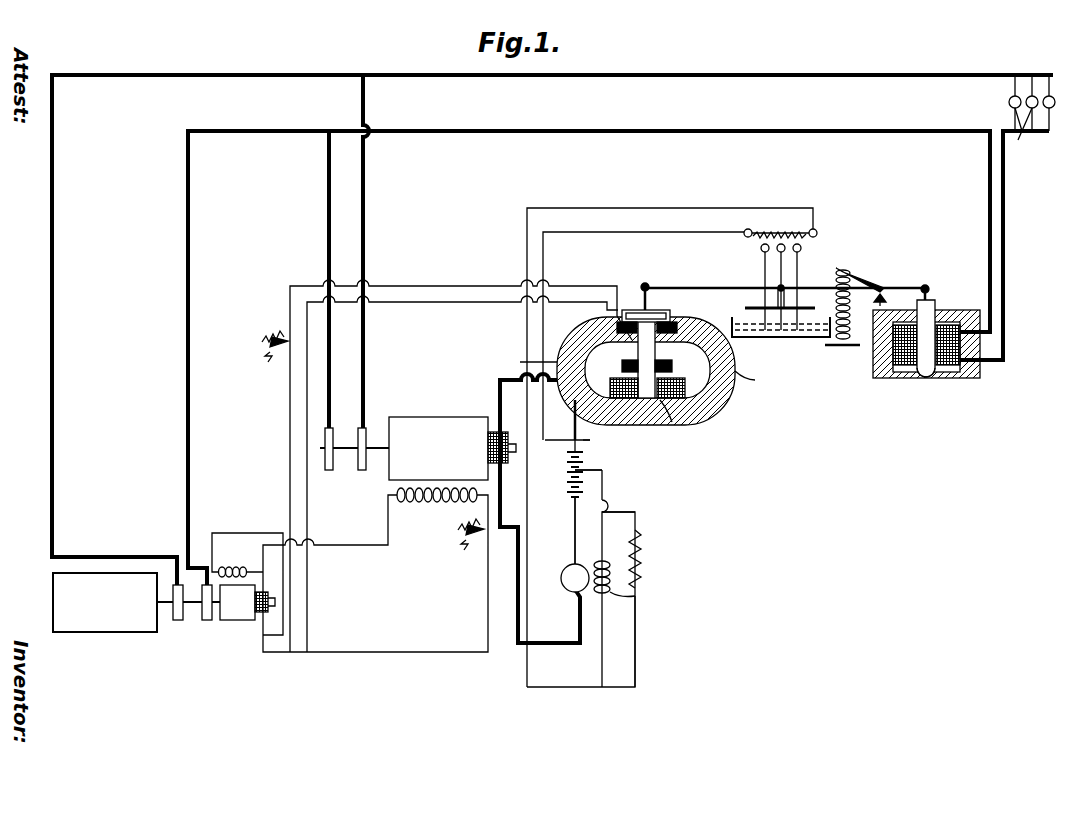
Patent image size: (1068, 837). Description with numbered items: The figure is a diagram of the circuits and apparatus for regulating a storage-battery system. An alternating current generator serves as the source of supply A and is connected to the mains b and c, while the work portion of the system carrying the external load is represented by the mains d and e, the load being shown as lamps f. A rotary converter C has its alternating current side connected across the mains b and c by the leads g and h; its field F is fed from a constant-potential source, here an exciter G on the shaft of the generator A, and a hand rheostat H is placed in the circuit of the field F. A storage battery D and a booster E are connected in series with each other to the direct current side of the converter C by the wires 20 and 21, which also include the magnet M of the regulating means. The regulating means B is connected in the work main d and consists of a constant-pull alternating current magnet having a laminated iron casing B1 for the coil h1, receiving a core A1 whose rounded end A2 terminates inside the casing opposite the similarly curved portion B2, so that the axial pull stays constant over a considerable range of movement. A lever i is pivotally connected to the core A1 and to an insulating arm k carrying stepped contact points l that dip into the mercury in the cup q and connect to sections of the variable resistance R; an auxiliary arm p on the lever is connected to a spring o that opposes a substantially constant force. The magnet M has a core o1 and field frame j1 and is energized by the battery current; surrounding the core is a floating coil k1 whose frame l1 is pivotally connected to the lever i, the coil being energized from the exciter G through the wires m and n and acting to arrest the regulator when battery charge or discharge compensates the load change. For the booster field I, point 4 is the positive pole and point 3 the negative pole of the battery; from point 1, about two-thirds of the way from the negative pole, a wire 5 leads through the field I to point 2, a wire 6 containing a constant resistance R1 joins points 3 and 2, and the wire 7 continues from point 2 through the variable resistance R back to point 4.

The main c is at (258, 76).
The main b is at (258, 134).
The main d is at (1049, 131).
The main e is at (1032, 75).
The lamps f is at (1022, 138).
The lead g is at (321, 208).
The lead h is at (364, 211).
The wire m is at (428, 280).
The wire n is at (424, 302).
The hand rheostat H is at (268, 362).
The wire 7 is at (572, 207).
The point 2 is at (602, 688).
The wire 20 is at (500, 380).
The wire 21 is at (518, 645).
The magnet M is at (608, 400).
The regulating means B is at (893, 275).
The floating coil k1 is at (612, 328).
The stationary correcting coil o1 is at (557, 356).
The field frame j1 is at (660, 395).
The lever i is at (698, 290).
The frame l1 is at (655, 290).
The contact points l is at (760, 366).
The cup o is at (781, 340).
The variable resistance R is at (780, 272).
The arm k is at (745, 306).
The spring q is at (832, 345).
The auxiliary arm p is at (845, 270).
The coil h1 is at (870, 372).
The core A1 is at (930, 318).
The rounded end of core A2 is at (922, 378).
The laminated iron casing B1 is at (982, 368).
The curved portion of casing B2 is at (940, 380).
The rotary converter C is at (418, 448).
The field F is at (375, 570).
The source of supply A is at (136, 602).
The exciter G is at (232, 625).
The storage battery D is at (560, 502).
The point 4 is at (595, 439).
The point 1 is at (598, 470).
The wire 5 is at (602, 500).
The point 3 is at (570, 508).
The booster E is at (565, 582).
The constant resistance R1 is at (641, 555).
The field I is at (610, 596).
The wire 6 is at (636, 638).